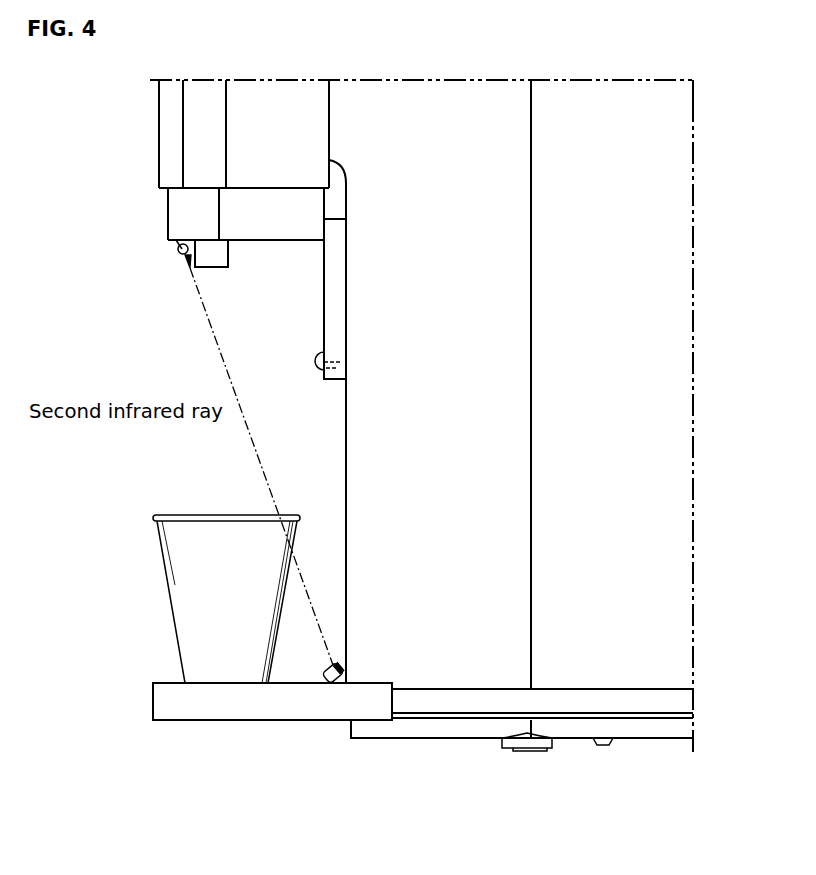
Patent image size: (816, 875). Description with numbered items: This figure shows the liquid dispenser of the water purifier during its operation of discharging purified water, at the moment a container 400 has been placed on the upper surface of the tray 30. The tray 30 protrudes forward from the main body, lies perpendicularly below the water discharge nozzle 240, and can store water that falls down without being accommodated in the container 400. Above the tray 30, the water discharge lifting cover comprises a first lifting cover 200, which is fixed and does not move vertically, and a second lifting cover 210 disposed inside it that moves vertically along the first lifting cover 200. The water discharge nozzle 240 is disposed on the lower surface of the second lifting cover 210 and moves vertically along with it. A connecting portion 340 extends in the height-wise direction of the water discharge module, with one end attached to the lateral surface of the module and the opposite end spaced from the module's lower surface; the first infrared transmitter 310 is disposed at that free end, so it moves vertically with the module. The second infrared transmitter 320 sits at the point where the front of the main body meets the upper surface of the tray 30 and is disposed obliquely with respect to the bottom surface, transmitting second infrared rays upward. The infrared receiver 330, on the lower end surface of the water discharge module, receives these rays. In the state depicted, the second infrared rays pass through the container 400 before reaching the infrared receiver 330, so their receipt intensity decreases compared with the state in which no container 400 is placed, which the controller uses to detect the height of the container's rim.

The first lifting cover 200 is at (168, 127).
The second lifting cover 210 is at (178, 212).
The water discharge nozzle 240 is at (217, 258).
The connecting portion 340 is at (333, 299).
The first infrared transmitter 310 is at (317, 361).
The second infrared transmitter 320 is at (343, 663).
The infrared receiver 330 is at (177, 248).
The container 400 is at (187, 598).
The tray 30 is at (170, 701).